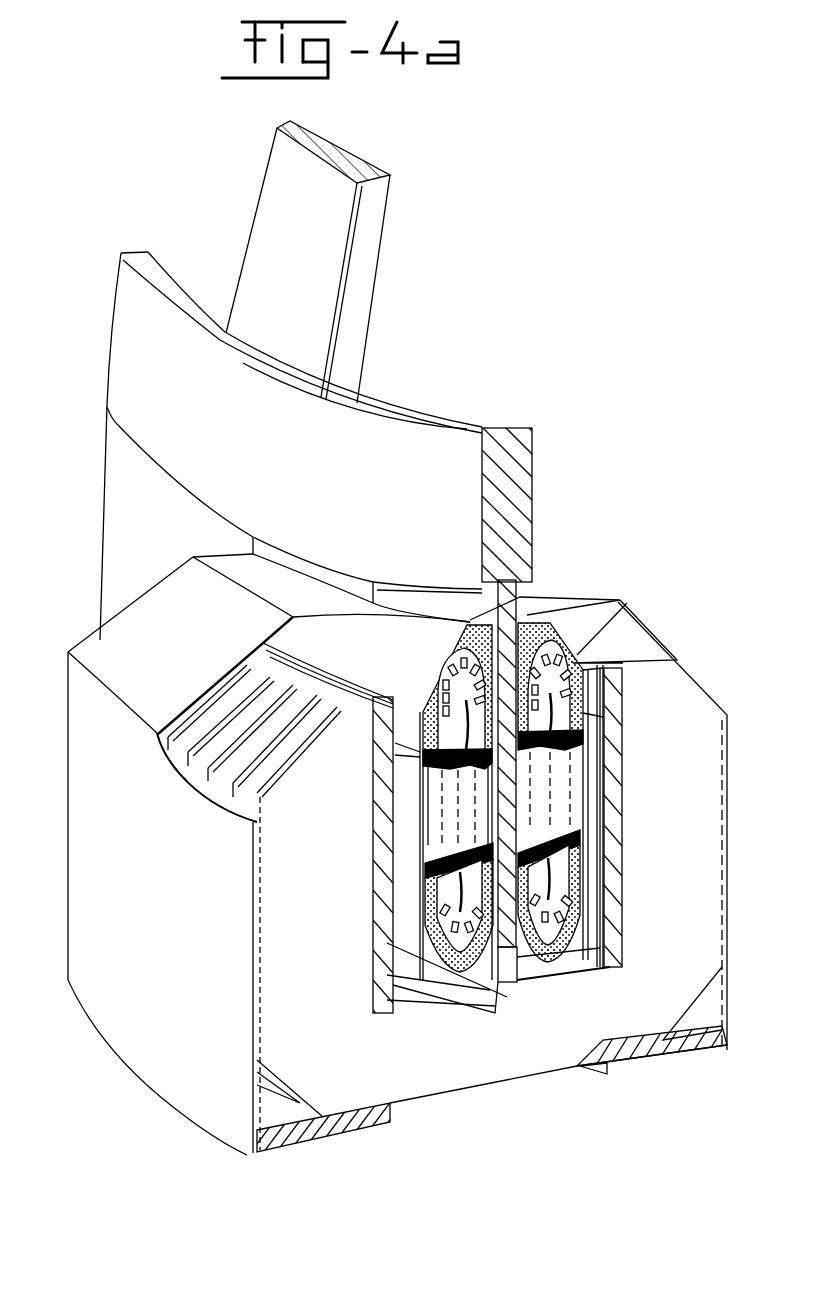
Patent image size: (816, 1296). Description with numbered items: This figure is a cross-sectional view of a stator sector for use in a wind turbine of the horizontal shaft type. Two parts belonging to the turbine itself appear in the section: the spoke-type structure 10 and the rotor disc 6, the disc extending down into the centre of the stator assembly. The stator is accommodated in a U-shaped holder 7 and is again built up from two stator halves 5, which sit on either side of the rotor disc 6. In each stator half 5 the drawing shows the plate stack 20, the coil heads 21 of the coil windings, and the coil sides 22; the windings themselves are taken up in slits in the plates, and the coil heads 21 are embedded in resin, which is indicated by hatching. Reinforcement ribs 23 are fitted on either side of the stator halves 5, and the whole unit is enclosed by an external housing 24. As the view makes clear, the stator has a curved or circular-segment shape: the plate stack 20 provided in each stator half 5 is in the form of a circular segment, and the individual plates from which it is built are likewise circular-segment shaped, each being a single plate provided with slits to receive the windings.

The stator halves 5 is at (428, 650).
The rotor disc 6 is at (510, 576).
The U-shaped holder 7 is at (506, 1005).
The spoke-type structure 10 is at (382, 354).
The plate stacks 20 is at (560, 787).
The coil heads 21 is at (627, 603).
The coil sides 22 is at (580, 653).
The reinforcement ribs 23 is at (388, 1080).
The external housing 24 is at (96, 651).